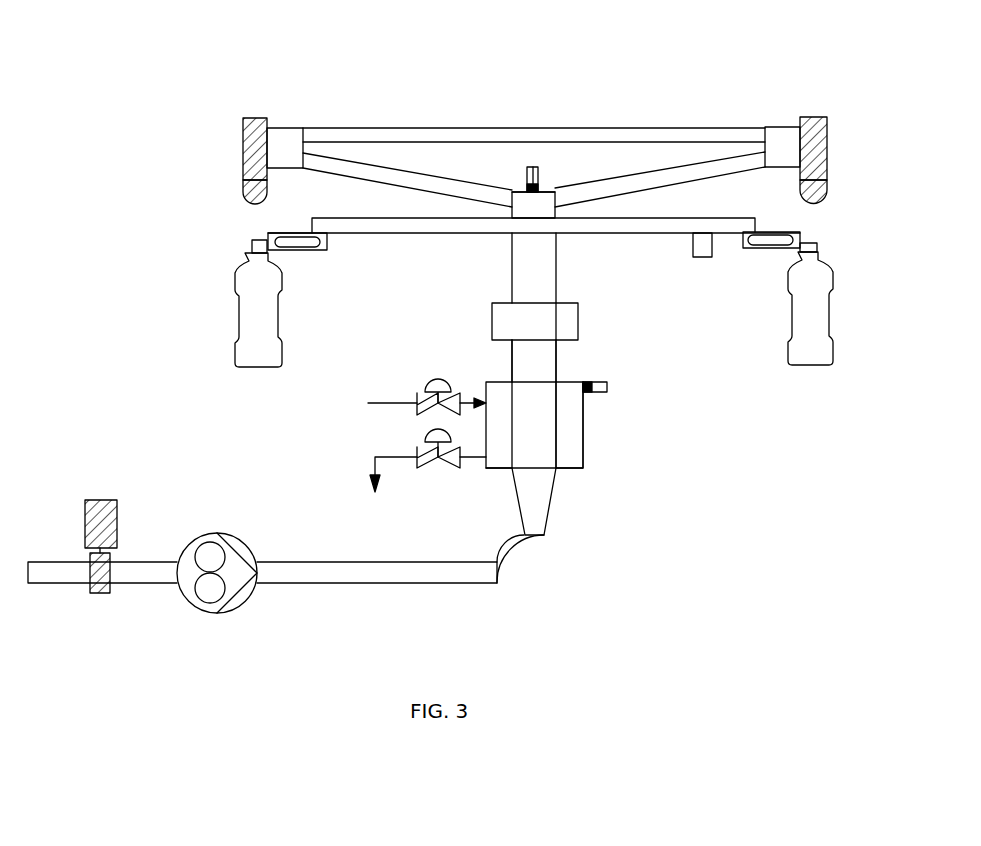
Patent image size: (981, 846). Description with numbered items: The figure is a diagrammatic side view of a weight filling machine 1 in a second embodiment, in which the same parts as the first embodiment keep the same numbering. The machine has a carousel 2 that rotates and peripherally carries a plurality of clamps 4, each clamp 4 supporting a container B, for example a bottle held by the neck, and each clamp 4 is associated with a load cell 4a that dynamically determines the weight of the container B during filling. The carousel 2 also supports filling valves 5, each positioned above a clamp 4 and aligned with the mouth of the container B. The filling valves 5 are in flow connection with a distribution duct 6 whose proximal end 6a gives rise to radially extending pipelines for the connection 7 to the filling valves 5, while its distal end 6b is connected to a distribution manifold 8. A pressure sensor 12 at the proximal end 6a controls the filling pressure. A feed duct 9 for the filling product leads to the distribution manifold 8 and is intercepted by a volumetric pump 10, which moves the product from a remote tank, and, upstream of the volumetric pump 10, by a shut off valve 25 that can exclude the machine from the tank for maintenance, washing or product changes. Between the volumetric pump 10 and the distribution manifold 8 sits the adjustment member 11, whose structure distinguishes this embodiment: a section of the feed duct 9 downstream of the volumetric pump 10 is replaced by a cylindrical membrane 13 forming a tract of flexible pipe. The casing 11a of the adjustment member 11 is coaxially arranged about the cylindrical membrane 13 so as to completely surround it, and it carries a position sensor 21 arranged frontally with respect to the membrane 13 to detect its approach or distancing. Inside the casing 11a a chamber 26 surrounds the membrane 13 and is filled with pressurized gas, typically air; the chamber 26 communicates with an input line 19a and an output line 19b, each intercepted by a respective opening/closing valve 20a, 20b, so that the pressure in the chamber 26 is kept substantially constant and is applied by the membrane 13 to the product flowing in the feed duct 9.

The weight filling machine 1 is at (157, 195).
The carousel 2 is at (667, 217).
The clamp 4 is at (245, 250).
The load cell 4a is at (312, 253).
The filling valve 5 is at (242, 155).
The distribution duct 6 is at (557, 255).
The proximal end 6a is at (548, 190).
The distal end 6b is at (557, 295).
The pipelines for the connection 7 is at (387, 180).
The distribution manifold 8 is at (492, 318).
The feed duct 9 is at (508, 348).
The volumetric pump 10 is at (247, 600).
The adjustment member 11 is at (587, 420).
The casing 11a is at (498, 470).
The pressure sensor 12 is at (532, 167).
The cylindrical membrane 13 is at (557, 448).
The input line 19a is at (387, 410).
The output line 19b is at (395, 460).
The opening/closing valve 20a is at (431, 393).
The opening/closing valve 20b is at (450, 467).
The position sensor 21 is at (607, 383).
The shut off valve 25 is at (92, 522).
The chamber 26 is at (578, 438).
The container B is at (232, 313).